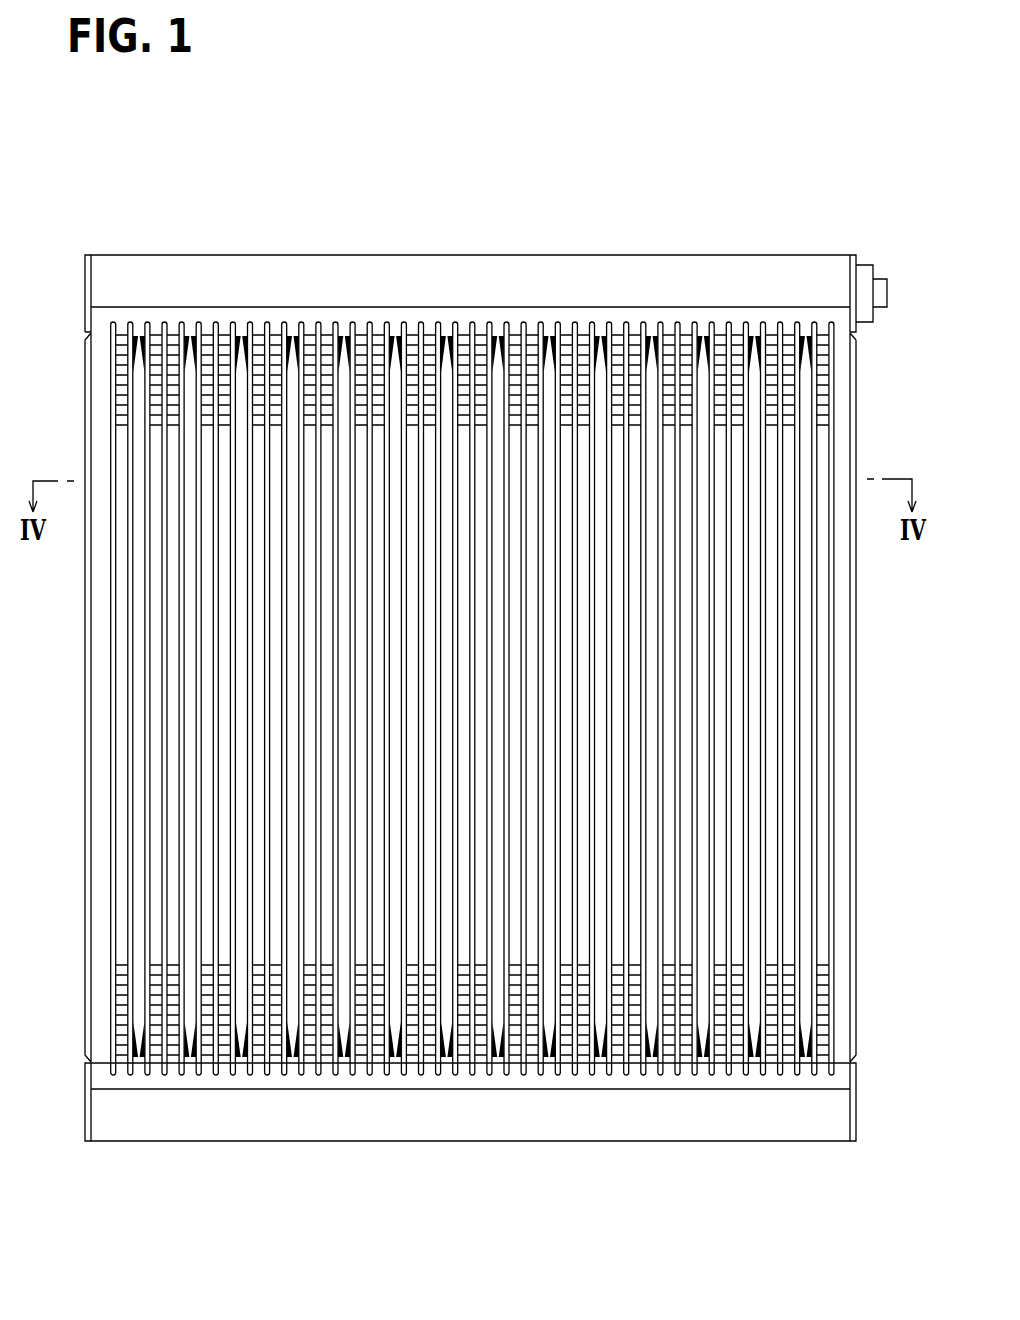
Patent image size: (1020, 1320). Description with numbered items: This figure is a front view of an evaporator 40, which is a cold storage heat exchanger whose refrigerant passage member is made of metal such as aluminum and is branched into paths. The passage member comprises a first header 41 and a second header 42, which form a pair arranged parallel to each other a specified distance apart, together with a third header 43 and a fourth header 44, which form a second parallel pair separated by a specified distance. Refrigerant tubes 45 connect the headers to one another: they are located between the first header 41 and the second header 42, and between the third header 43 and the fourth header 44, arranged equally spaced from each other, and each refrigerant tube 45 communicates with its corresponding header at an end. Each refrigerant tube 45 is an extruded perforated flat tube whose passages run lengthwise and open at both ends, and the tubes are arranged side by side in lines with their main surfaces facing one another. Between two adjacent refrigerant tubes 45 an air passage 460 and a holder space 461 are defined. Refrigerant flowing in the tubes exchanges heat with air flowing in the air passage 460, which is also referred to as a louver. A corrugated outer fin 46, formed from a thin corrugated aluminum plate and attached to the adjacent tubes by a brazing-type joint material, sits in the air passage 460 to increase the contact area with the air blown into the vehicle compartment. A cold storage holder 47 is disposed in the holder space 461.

The evaporator 40 is at (721, 206).
The first header 41 is at (354, 273).
The second header 42 is at (394, 1120).
The third header 43 is at (598, 273).
The fourth header 44 is at (570, 1120).
The refrigerant tube 45 is at (826, 797).
The outer fin 46 is at (510, 782).
The cold storage holder 47 is at (803, 728).
The air passage 460 is at (820, 1027).
The holder space 461 is at (803, 995).